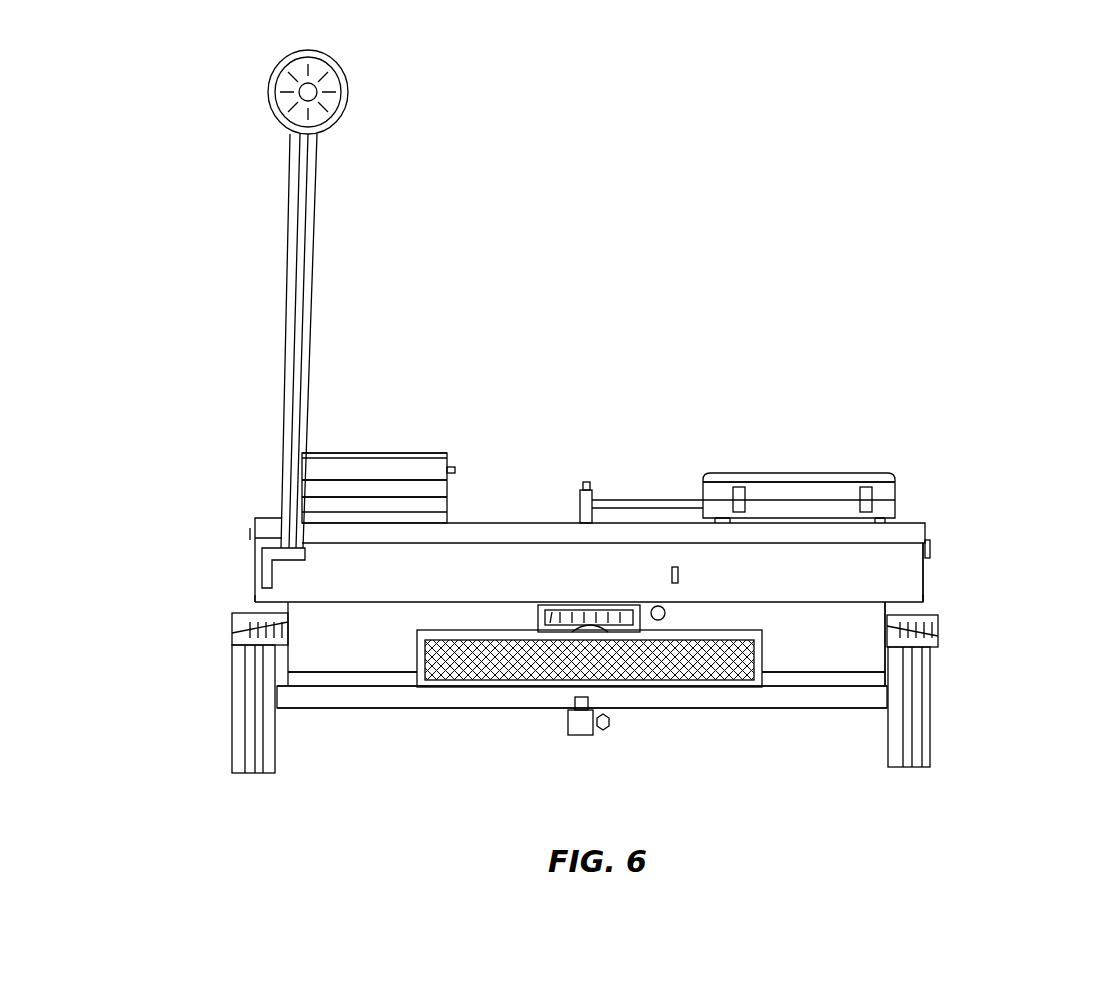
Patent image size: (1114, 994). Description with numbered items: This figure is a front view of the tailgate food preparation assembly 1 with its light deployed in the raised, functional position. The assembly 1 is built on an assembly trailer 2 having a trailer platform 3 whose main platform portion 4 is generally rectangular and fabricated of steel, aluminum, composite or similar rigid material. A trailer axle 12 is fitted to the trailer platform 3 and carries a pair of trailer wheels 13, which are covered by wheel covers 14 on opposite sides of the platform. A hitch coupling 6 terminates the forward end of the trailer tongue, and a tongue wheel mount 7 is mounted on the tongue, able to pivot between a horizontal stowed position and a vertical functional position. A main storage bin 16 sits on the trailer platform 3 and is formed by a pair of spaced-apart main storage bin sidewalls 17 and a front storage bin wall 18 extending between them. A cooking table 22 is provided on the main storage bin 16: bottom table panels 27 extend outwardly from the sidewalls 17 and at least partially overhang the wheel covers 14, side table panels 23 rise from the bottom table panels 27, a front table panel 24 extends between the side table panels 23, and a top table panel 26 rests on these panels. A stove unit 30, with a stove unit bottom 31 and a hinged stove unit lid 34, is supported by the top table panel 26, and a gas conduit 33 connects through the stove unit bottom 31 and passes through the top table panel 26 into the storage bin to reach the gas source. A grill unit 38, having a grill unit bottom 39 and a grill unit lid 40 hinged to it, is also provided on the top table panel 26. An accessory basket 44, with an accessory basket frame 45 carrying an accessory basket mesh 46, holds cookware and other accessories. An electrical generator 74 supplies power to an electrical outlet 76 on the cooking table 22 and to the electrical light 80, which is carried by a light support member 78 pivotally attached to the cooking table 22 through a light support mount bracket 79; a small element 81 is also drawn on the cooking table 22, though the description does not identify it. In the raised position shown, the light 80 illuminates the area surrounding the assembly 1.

The tailgate food preparation assembly 1 is at (874, 83).
The assembly trailer 2 is at (953, 484).
The trailer platform 3 is at (363, 690).
The main platform portion 4 is at (350, 672).
The hitch coupling 6 is at (575, 737).
The tongue wheel mount 7 is at (607, 730).
The trailer axle 12 is at (417, 697).
The trailer wheels 13 is at (250, 720).
The wheel covers 14 is at (248, 622).
The main storage bin 16 is at (795, 680).
The main storage bin sidewalls 17 is at (290, 625).
The front storage bin wall 18 is at (832, 650).
The cooking table 22 is at (928, 577).
The side table panels 23 is at (255, 570).
The front table panel 24 is at (840, 600).
The top table panel 26 is at (548, 523).
The bottom table panels 27 is at (262, 603).
The stove unit 30 is at (808, 470).
The stove unit bottom 31 is at (795, 510).
The gas conduit 33 is at (640, 500).
The stove unit lid 34 is at (765, 473).
The grill unit 38 is at (388, 445).
The grill unit bottom 39 is at (427, 492).
The grill unit lid 40 is at (352, 452).
The accessory basket 44 is at (702, 692).
The accessory basket frame 45 is at (738, 612).
The accessory basket mesh 46 is at (500, 678).
The electrical generator 74 is at (575, 606).
The electrical outlet 76 is at (255, 540).
The light support member 78 is at (298, 288).
The light support mount bracket 79 is at (280, 554).
The electrical light 80 is at (350, 88).
The switch 81 is at (680, 575).